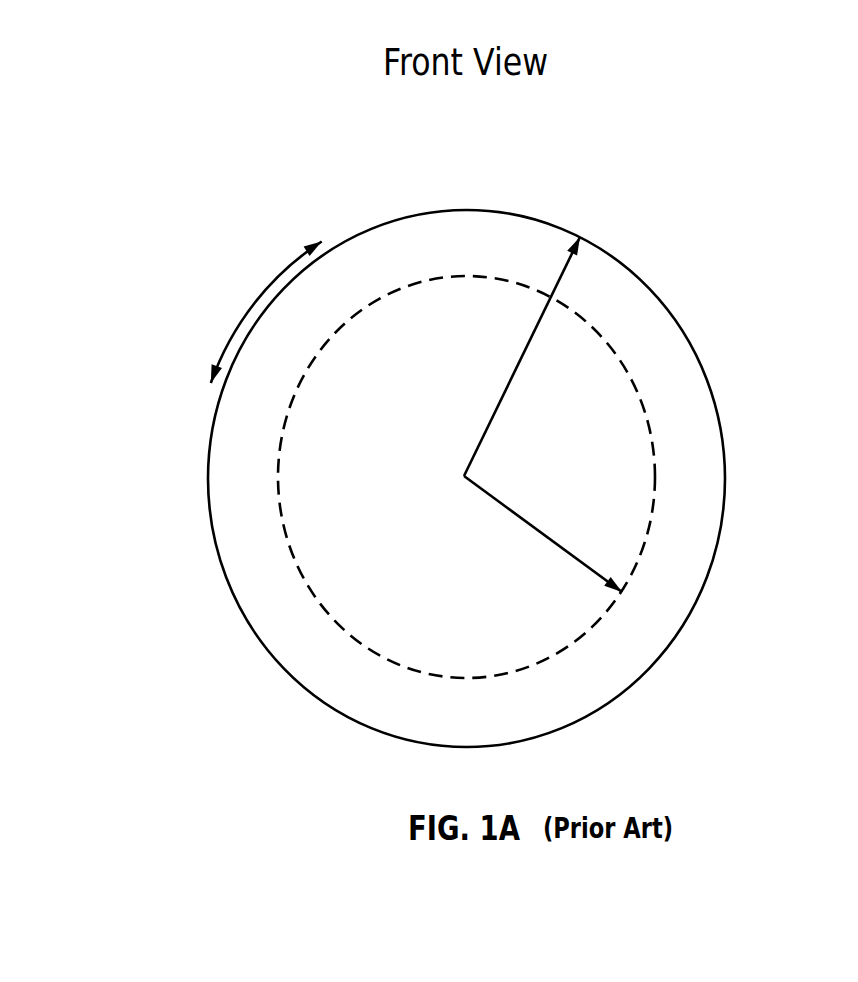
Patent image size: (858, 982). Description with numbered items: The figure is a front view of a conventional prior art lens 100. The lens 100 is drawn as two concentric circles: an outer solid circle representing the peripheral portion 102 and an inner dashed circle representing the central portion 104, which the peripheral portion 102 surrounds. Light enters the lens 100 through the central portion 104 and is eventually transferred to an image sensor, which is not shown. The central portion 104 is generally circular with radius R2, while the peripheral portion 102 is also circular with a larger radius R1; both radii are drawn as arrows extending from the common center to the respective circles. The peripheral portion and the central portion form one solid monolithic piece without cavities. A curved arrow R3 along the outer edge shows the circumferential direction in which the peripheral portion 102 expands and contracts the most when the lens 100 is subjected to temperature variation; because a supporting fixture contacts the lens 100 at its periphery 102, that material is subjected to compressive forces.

The lens 100 is at (668, 195).
The peripheral portion 102 is at (702, 413).
The central portion 104 is at (627, 560).
The radius of the peripheral portion R1 is at (522, 356).
The radius of the central portion R2 is at (543, 534).
The circumferential expansion direction arrow R3 is at (266, 313).